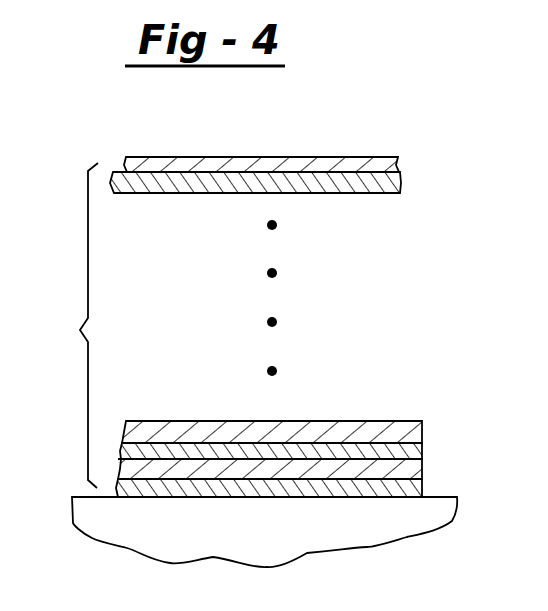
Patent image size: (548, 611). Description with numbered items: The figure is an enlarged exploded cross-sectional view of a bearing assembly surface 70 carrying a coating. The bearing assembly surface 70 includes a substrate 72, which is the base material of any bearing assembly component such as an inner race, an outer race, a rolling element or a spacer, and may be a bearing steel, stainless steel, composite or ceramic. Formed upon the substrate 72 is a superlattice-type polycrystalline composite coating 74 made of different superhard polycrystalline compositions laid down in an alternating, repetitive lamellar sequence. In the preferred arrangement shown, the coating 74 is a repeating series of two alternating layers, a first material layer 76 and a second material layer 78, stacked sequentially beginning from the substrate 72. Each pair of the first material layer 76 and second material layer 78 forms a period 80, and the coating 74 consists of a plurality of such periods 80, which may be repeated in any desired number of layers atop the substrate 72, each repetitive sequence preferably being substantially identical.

The bearing assembly surface 70 is at (84, 153).
The substrate 72 is at (74, 496).
The superlattice-type polycrystalline composite coating 74 is at (71, 325).
The first material layer 76 is at (424, 490).
The second material layer 78 is at (425, 471).
The period 80 is at (513, 552).